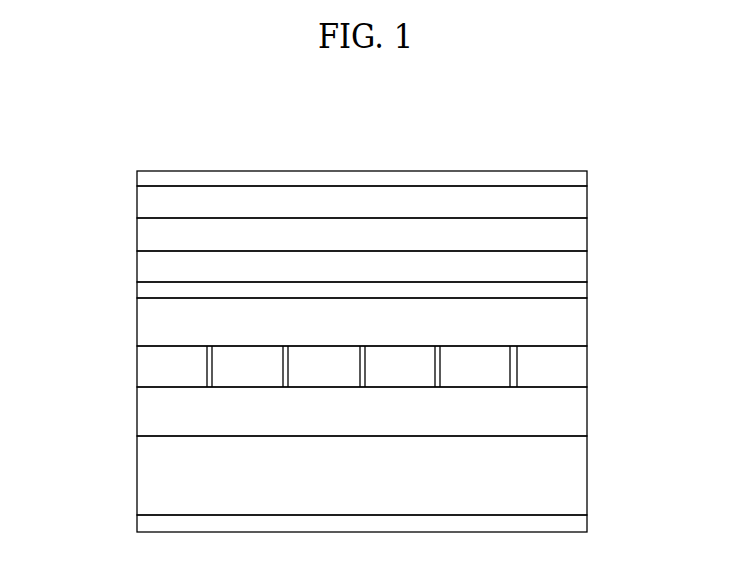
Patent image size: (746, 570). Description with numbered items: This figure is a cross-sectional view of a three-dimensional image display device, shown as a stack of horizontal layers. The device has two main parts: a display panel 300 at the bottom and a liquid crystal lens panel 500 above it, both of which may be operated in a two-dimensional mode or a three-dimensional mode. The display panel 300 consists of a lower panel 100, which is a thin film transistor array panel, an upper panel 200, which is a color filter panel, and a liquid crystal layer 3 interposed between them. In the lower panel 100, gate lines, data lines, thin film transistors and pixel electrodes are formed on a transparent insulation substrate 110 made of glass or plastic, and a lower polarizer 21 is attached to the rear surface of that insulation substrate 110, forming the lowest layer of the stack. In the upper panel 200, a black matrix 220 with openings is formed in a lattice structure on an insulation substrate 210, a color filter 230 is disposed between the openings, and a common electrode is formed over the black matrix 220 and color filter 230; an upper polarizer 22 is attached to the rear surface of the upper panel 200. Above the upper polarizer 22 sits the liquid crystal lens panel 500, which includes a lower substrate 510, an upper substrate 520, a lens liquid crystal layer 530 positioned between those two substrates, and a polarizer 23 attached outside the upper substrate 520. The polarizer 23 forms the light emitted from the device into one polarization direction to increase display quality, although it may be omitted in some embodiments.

The liquid crystal lens panel 500 is at (131, 172).
The polarizer 23 is at (578, 178).
The upper substrate 520 is at (578, 196).
The lens liquid crystal layer 530 is at (578, 232).
The lower substrate 510 is at (575, 264).
The display panel 300 is at (76, 320).
The upper panel 200 is at (131, 283).
The upper polarizer 22 is at (578, 290).
The insulation substrate 210 is at (570, 323).
The color filter 230 is at (572, 363).
The liquid crystal layer 3 is at (131, 388).
The black matrix 220 is at (517, 372).
The lower panel 100 is at (131, 436).
The insulation substrate 110 is at (572, 473).
The lower polarizer 21 is at (572, 524).